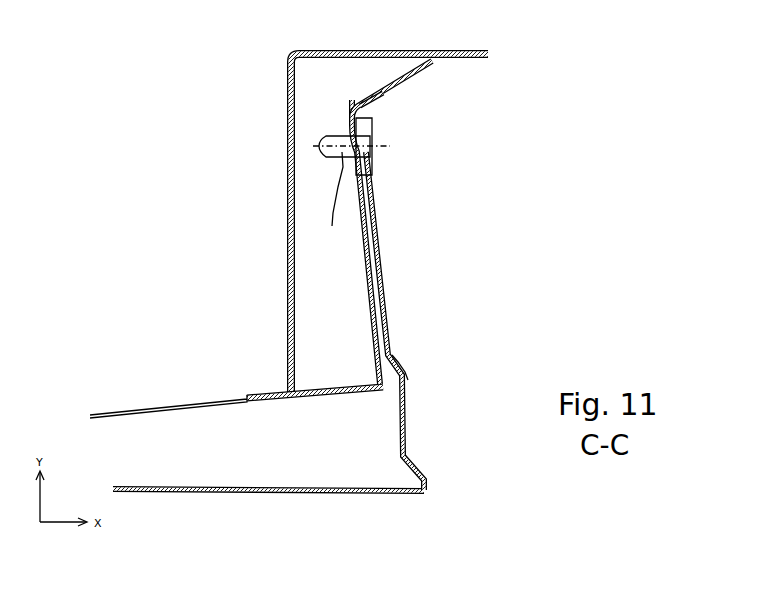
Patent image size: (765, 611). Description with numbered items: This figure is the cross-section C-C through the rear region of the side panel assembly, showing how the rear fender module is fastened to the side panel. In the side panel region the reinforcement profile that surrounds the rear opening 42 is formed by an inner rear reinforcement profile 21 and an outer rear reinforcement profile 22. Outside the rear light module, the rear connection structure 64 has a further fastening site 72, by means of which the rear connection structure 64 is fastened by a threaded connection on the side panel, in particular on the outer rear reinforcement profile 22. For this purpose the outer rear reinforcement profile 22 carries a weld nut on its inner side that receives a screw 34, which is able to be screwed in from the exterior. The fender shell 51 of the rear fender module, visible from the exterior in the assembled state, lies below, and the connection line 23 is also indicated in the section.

The inner rear reinforcement profile 21 is at (290, 272).
The outer rear reinforcement profile 22 is at (373, 265).
The connection line 23 is at (332, 201).
The screw 34 is at (336, 133).
The rear opening 42 is at (338, 325).
The fender shell 51 is at (298, 493).
The rear connection structure 64 is at (376, 231).
The further fastening site 72 is at (416, 125).